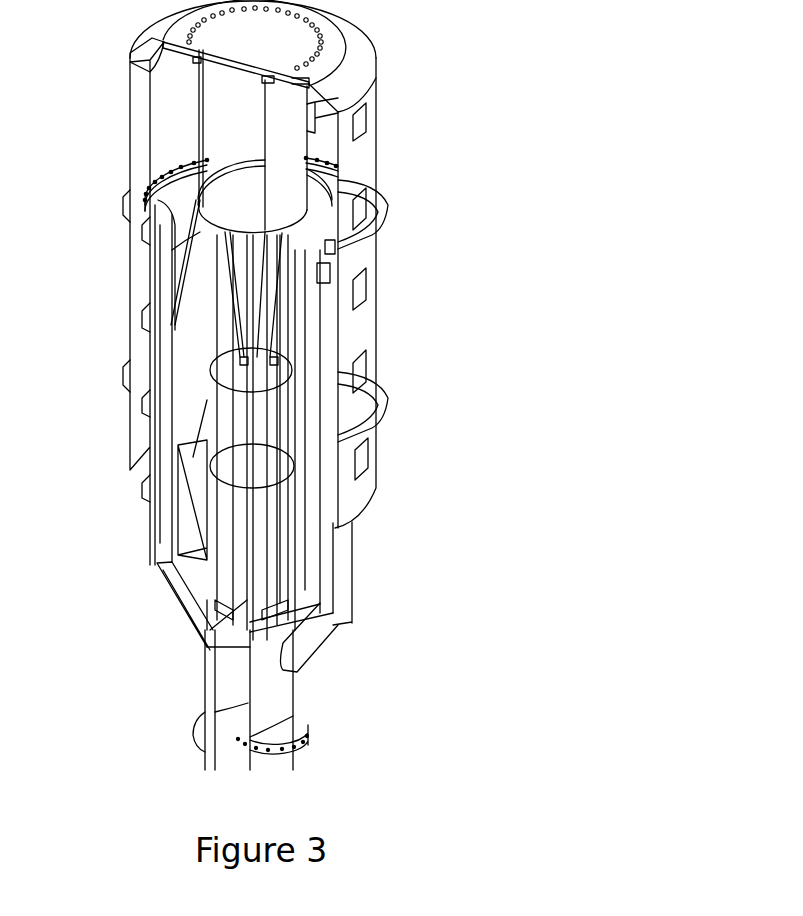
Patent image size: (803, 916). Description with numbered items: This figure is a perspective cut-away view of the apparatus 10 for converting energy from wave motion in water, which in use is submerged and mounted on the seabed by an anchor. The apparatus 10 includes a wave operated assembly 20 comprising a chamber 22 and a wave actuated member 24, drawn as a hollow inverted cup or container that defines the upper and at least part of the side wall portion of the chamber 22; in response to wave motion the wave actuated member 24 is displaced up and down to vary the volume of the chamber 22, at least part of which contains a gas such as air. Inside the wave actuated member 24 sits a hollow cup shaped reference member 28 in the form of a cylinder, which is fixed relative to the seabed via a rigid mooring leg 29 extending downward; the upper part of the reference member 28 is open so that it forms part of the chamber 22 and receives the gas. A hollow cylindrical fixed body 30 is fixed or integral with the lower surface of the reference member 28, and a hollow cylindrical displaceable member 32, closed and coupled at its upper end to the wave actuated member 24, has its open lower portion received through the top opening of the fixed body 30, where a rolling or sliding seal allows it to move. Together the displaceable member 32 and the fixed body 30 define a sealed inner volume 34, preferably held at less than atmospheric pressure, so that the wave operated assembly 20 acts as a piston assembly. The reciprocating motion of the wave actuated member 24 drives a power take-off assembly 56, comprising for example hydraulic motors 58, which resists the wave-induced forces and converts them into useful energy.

The apparatus 10 is at (443, 80).
The wave operated assembly 20 is at (360, 42).
The chamber 22 is at (330, 147).
The wave actuated member 24 is at (145, 36).
The reference member 28 is at (149, 522).
The mooring leg 29 is at (200, 732).
The fixed body 30 is at (330, 337).
The displaceable member 32 is at (300, 170).
The sealed inner volume 34 is at (280, 415).
The power take-off assembly 56 is at (272, 486).
The hydraulic motors 58 is at (236, 437).